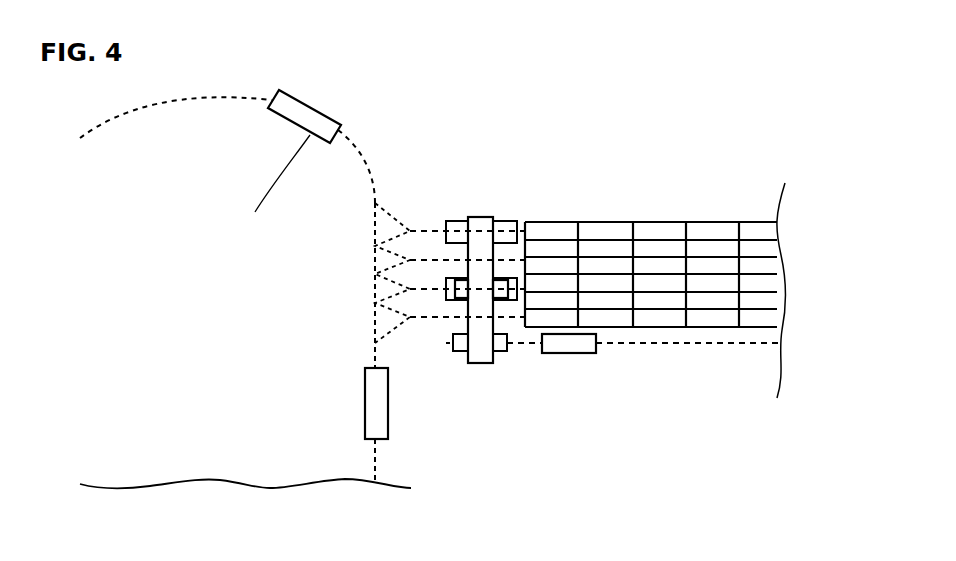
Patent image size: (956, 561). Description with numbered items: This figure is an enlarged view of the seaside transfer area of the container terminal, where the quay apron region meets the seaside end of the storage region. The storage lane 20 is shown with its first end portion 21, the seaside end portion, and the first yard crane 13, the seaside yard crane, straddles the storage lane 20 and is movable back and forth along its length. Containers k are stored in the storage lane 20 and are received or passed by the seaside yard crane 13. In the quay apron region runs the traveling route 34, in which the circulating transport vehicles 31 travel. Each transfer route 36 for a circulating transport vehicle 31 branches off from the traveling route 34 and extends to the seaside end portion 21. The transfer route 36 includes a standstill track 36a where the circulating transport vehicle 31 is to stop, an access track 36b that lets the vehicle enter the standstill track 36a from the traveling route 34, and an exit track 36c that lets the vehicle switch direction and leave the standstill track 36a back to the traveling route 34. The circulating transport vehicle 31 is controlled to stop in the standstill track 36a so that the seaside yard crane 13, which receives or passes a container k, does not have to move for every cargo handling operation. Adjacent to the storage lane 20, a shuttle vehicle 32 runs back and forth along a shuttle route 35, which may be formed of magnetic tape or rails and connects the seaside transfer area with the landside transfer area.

The storage lane 20 is at (687, 200).
The first end portion 21 is at (498, 275).
The first yard crane 13 is at (482, 226).
The circulating transport vehicle 31 is at (365, 403).
The shuttle vehicle 32 is at (574, 343).
The traveling route 34 is at (362, 152).
The shuttle route 35 is at (660, 343).
The transfer route 36 is at (358, 228).
The standstill track 36a is at (434, 227).
The access track 36b is at (377, 209).
The exit track 36c is at (395, 236).
The container k is at (604, 233).